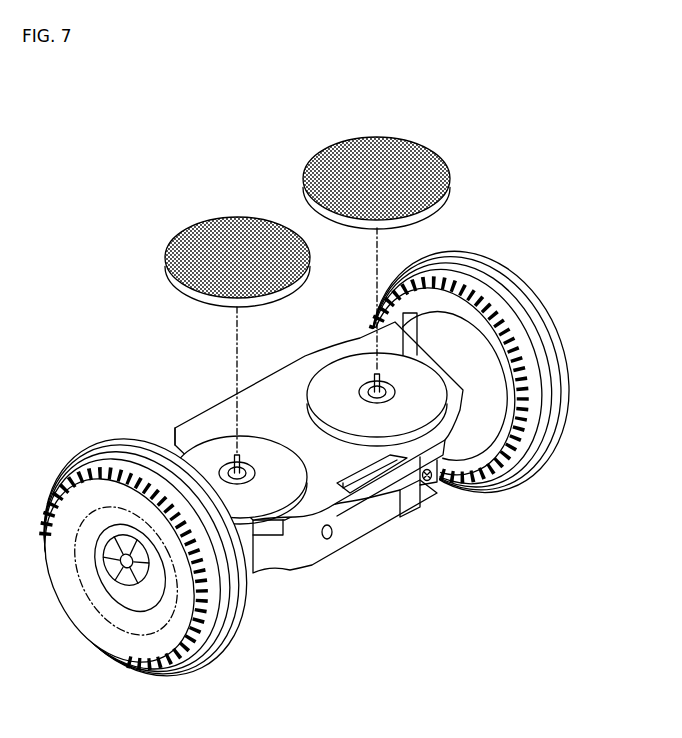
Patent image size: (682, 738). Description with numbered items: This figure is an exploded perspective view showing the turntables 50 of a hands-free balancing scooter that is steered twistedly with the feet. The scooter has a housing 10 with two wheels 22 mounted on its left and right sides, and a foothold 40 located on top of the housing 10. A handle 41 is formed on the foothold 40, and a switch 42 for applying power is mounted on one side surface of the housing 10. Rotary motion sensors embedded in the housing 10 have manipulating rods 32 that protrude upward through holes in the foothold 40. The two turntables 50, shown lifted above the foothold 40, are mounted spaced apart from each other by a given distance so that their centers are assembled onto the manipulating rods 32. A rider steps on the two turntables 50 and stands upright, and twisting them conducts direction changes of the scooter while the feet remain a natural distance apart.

The housing 10 is at (315, 563).
The wheels 22 is at (502, 493).
The manipulating rods 32 is at (372, 386).
The foothold 40 is at (272, 387).
The handle 41 is at (382, 500).
The switch 42 is at (434, 482).
The turntables 50 is at (330, 152).